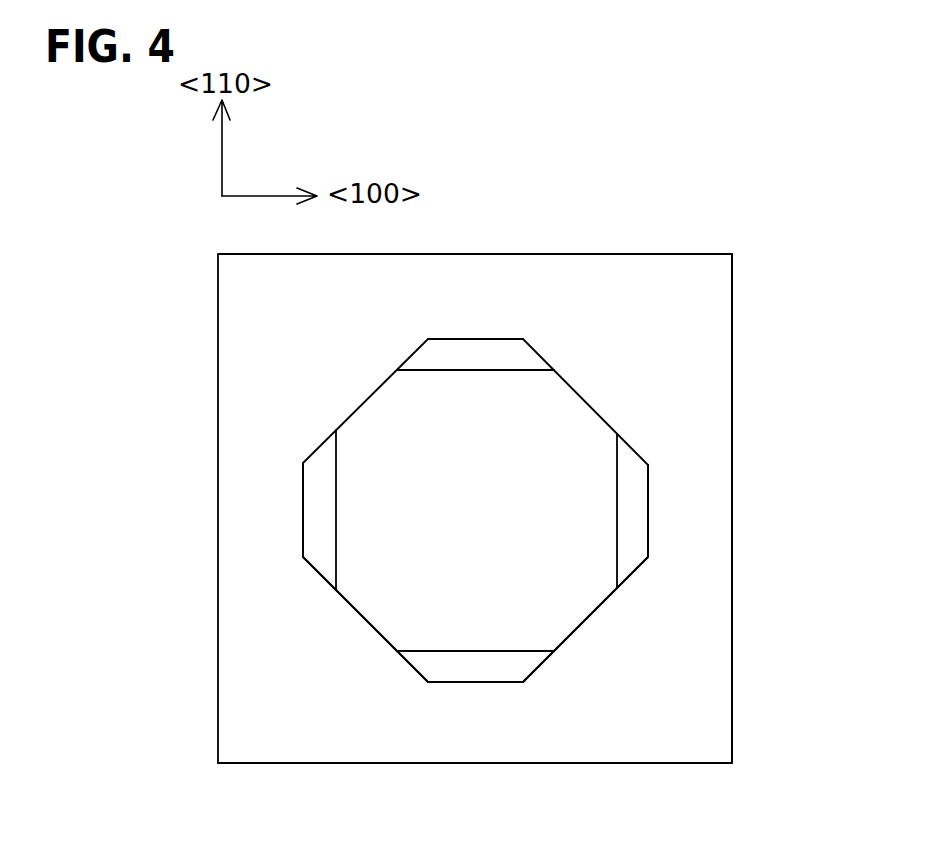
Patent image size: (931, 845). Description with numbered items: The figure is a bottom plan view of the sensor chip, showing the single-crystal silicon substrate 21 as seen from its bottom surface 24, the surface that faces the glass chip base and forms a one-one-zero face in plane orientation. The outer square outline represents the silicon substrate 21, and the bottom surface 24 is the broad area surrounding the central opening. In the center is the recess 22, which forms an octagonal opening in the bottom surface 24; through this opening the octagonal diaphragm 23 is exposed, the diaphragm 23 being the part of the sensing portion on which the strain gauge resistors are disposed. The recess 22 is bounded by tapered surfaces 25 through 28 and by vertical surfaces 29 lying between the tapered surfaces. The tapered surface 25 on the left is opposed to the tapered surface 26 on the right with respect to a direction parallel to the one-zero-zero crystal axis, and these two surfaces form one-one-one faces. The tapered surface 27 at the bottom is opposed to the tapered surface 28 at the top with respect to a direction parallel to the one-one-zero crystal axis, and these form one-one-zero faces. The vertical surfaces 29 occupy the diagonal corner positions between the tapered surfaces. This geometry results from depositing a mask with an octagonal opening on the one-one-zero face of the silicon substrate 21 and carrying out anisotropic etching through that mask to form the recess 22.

The silicon substrate 21 is at (732, 697).
The recess 22 is at (578, 628).
The diaphragm 23 is at (387, 417).
The bottom surface 24 is at (688, 630).
The tapered surface 25 is at (315, 511).
The tapered surface 26 is at (635, 517).
The tapered surface 27 is at (478, 668).
The tapered surface 28 is at (480, 353).
The vertical surfaces 29 is at (368, 628).